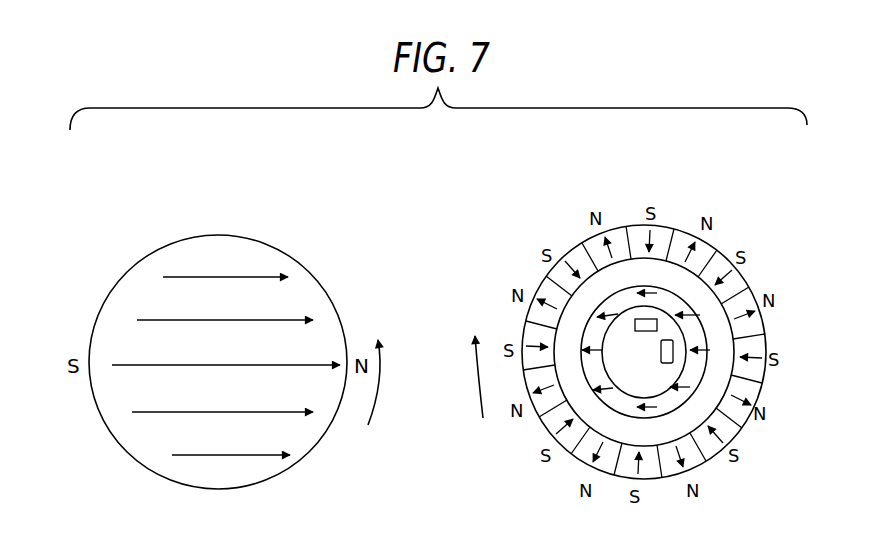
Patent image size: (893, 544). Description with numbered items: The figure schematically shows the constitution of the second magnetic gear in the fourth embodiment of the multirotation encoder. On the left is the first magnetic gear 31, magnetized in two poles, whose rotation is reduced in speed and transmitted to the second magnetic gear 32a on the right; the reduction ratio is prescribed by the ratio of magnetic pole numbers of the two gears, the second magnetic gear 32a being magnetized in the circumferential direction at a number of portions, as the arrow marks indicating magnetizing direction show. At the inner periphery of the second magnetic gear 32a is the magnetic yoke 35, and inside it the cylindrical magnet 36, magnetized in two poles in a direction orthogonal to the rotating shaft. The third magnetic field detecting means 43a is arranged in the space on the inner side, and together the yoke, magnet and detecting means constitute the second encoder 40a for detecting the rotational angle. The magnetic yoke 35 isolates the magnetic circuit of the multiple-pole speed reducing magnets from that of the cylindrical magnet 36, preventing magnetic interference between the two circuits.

The first magnetic gear 31 is at (137, 280).
The second magnetic gear 32a is at (668, 228).
The magnetic yoke 35 is at (705, 307).
The cylindrical magnet 36 is at (617, 300).
The second encoder 40a is at (648, 283).
The third magnetic field detecting means 43a is at (643, 323).